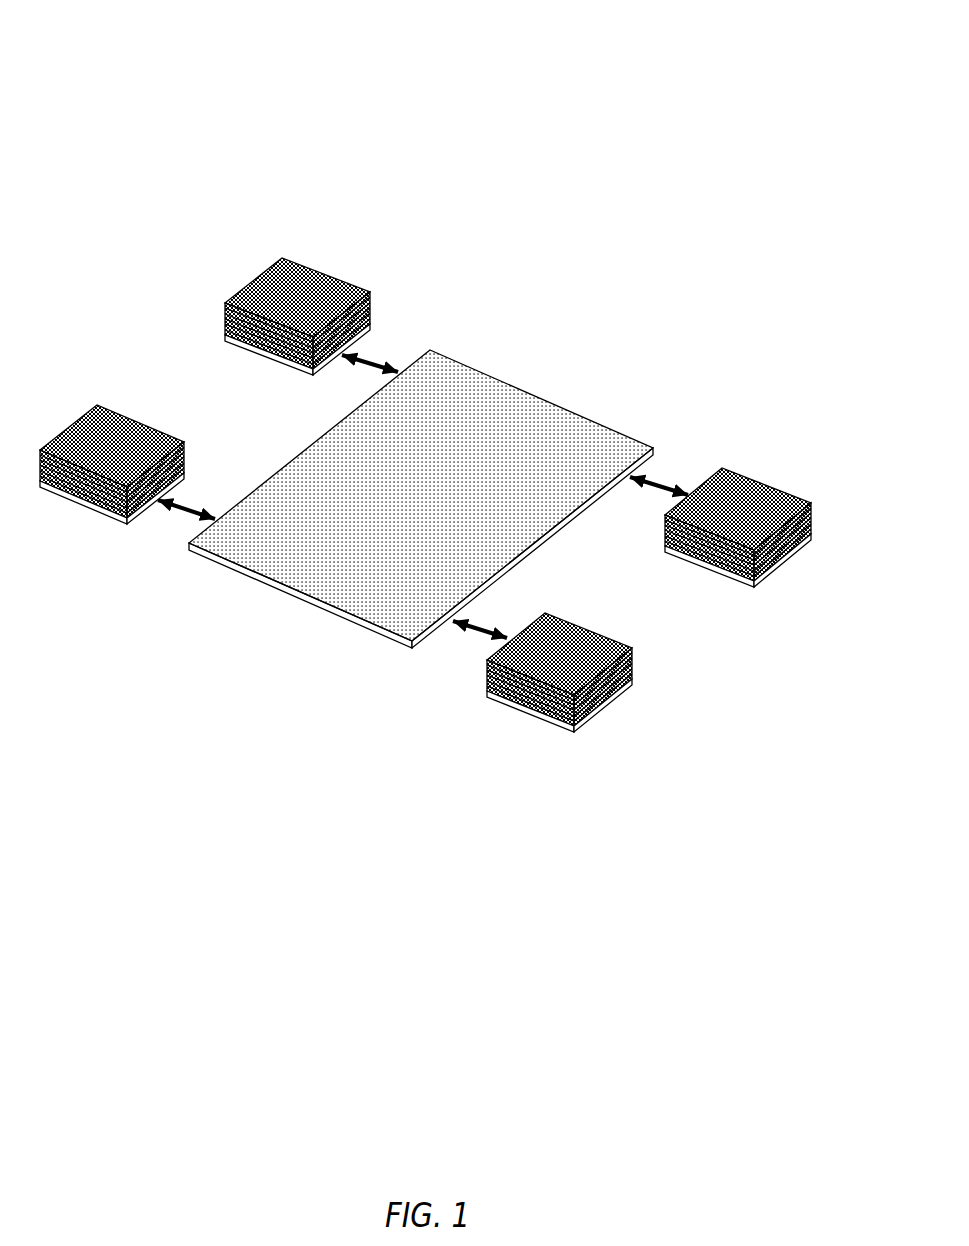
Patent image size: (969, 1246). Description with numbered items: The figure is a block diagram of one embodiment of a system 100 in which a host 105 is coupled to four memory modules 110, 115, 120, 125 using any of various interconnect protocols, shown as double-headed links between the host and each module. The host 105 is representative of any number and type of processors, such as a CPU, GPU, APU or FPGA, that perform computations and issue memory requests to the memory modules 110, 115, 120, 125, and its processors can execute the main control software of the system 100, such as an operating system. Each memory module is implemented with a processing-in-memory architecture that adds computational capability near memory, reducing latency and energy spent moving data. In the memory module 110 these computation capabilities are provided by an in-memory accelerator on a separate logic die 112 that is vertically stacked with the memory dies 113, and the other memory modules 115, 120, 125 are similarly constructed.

The system 100 is at (712, 65).
The host 105 is at (528, 392).
The memory module 110 is at (303, 243).
The logic die 112 is at (242, 350).
The memory dies 113 is at (213, 327).
The memory module 115 is at (88, 523).
The memory module 120 is at (560, 752).
The memory module 125 is at (753, 445).